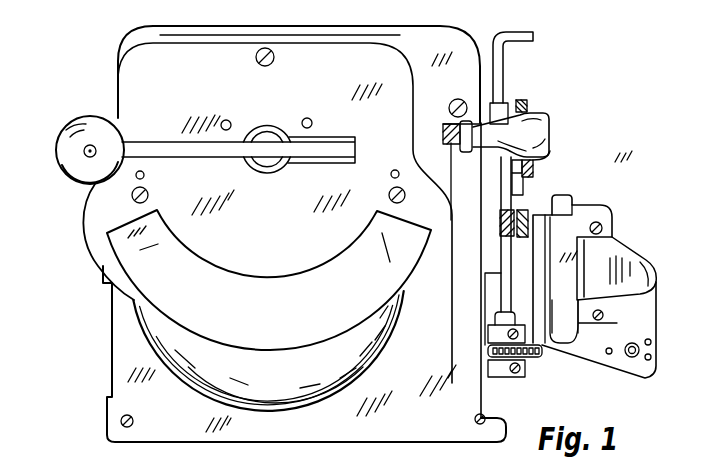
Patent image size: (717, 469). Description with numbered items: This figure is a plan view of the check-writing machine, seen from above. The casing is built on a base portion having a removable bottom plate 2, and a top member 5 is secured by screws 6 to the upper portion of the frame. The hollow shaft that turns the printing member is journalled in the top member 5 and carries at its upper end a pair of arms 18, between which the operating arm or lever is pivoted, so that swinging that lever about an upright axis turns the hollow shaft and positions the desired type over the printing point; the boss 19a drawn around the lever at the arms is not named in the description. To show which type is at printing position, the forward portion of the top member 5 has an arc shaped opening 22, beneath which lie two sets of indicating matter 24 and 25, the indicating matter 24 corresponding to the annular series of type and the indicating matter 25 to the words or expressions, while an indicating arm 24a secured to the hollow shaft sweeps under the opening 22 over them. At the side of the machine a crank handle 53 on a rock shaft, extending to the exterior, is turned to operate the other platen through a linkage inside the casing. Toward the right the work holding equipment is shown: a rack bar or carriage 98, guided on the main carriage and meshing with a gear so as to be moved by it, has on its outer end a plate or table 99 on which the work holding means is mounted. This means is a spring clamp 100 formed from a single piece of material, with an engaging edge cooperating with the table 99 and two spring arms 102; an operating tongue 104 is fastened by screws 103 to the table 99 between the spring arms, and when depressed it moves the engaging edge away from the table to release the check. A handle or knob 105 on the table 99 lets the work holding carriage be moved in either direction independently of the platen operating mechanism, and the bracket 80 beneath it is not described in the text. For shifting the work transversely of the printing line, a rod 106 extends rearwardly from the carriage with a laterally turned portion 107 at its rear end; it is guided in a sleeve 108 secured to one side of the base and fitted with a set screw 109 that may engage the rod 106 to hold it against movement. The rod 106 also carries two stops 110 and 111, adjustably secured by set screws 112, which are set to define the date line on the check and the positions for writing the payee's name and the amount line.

The removable bottom plate 2 is at (450, 293).
The top member 5 is at (378, 60).
The screws 6 is at (262, 50).
The arms 18 is at (337, 136).
The boss 19a is at (266, 124).
The arc shaped opening 22 is at (108, 238).
The indicating matter 24 is at (200, 310).
The indicating arm 24a is at (382, 233).
The indicating matter 25 is at (160, 243).
The crank handle 53 is at (540, 112).
The lever bracket 80 is at (537, 382).
The rack bar or carriage 98 is at (547, 362).
The plate or table 99 is at (656, 306).
The spring clamp 100 is at (570, 267).
The spring arms 102 is at (580, 224).
The screws 103 is at (604, 223).
The operating tongue 104 is at (637, 258).
The handle or knob 105 is at (656, 351).
The rod 106 is at (518, 185).
The laterally turned portion 107 is at (530, 34).
The sleeve 108 is at (540, 160).
The set screw 109 is at (552, 150).
The stop 110 is at (507, 103).
The stop 111 is at (512, 207).
The set screws 112 is at (526, 100).